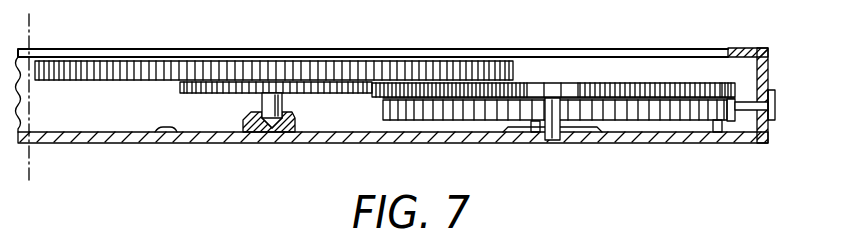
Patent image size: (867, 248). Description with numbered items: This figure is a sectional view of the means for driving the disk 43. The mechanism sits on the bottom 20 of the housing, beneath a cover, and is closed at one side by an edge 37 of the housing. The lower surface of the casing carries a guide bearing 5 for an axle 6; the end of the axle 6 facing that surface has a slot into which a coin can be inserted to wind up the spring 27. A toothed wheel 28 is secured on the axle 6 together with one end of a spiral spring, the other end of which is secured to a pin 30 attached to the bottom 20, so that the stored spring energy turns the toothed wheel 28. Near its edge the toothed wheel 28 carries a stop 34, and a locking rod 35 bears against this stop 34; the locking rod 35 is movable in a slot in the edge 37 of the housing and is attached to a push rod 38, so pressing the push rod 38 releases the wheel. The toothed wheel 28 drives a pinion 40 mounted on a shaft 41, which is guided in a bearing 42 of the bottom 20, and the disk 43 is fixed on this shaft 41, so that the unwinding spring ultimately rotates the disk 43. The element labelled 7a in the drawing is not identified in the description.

The guide bearing 5 is at (578, 131).
The axle 6 is at (550, 132).
The bottom wall 7a is at (649, 128).
The bottom of the housing 20 is at (155, 133).
The spring 27 is at (688, 118).
The toothed wheel 28 is at (543, 84).
The pin 30 is at (727, 118).
The stop 34 is at (730, 88).
The locking rod 35 is at (746, 100).
The edge of the housing 37 is at (750, 58).
The push rod 38 is at (774, 110).
The pinion 40 is at (190, 95).
The shaft 41 is at (283, 99).
The bearing 42 is at (247, 114).
The disk 43 is at (227, 63).